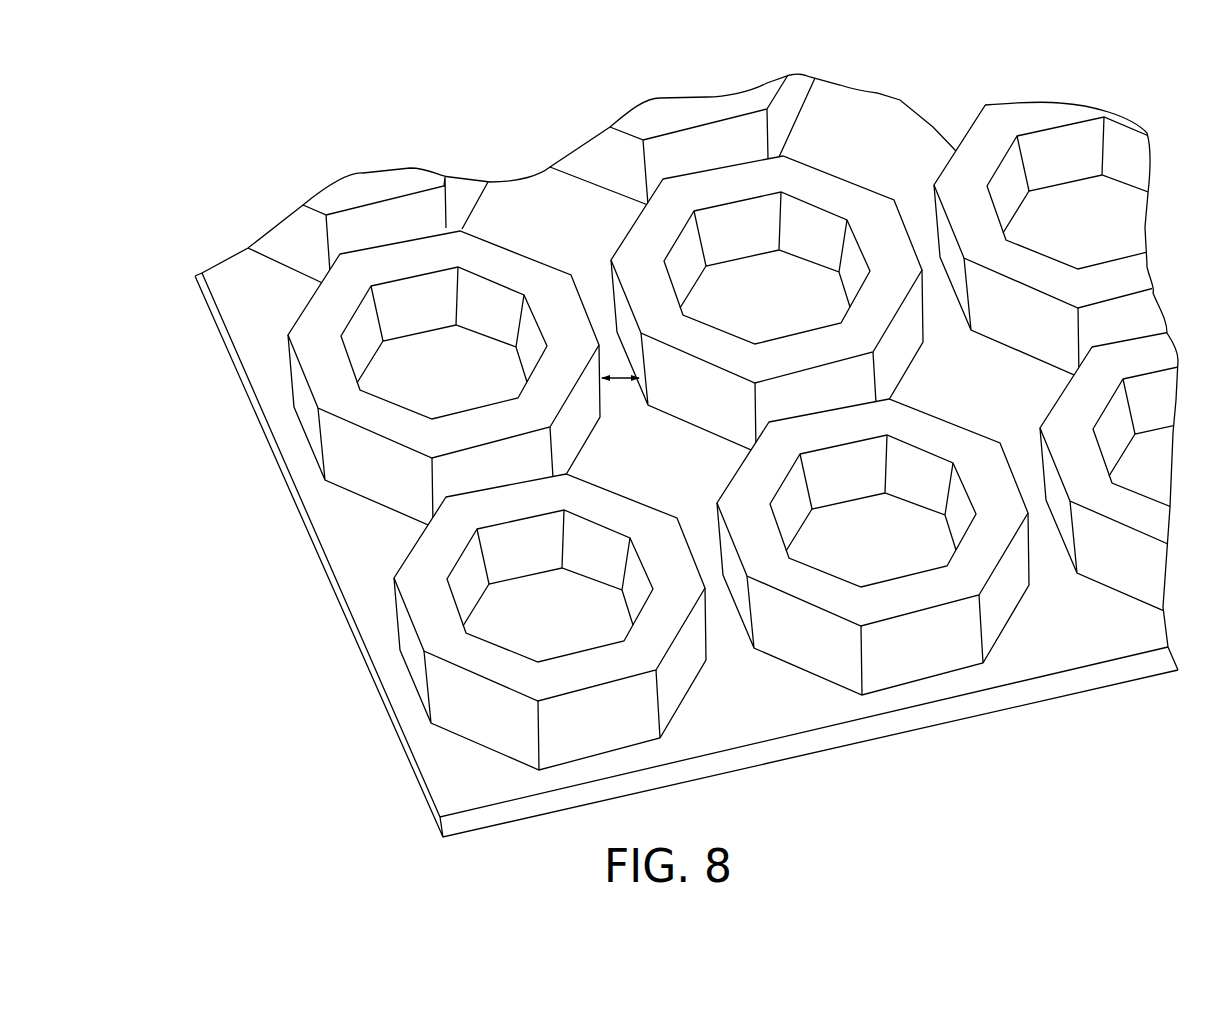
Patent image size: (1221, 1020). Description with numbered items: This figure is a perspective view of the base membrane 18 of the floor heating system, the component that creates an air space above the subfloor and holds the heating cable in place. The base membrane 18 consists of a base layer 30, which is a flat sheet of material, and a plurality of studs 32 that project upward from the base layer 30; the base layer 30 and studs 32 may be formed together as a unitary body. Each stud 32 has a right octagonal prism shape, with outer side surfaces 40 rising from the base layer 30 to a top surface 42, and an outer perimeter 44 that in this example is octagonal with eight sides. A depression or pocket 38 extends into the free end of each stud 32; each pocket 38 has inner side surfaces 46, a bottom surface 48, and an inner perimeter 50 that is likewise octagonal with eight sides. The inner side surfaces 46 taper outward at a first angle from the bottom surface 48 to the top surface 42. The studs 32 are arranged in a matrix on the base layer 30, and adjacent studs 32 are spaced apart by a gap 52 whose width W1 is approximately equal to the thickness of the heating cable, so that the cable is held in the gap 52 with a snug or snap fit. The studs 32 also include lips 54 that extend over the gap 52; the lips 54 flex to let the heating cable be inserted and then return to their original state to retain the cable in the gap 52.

The base membrane 18 is at (680, 448).
The base layer 30 is at (458, 777).
The stud 32 is at (711, 433).
The pocket 38 is at (493, 357).
The outer side surface 40 is at (477, 705).
The top surface 42 is at (518, 270).
The outer perimeter 44 is at (315, 295).
The inner side surface 46 is at (775, 278).
The bottom surface 48 is at (711, 446).
The inner perimeter 50 is at (353, 354).
The gap 52 is at (838, 380).
The lip 54 is at (1042, 433).
The width of the gap W1 is at (625, 380).